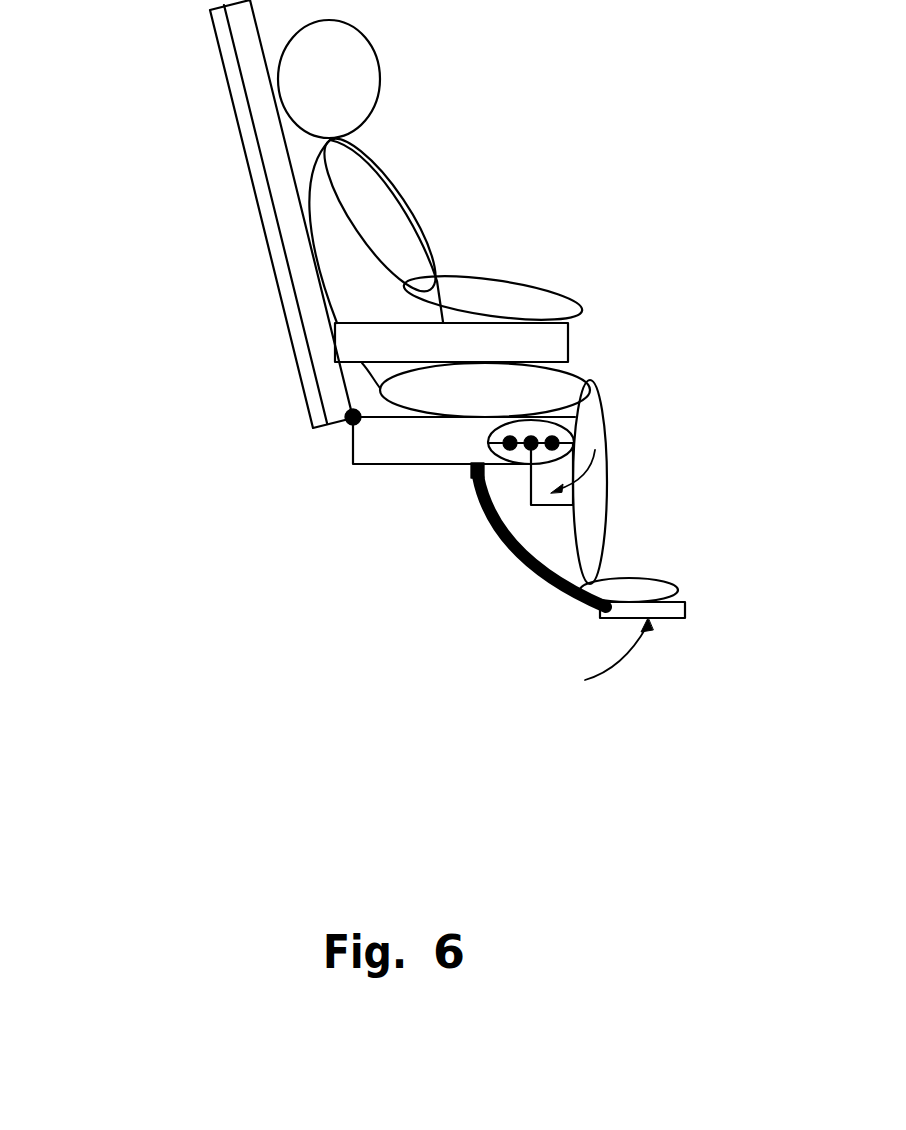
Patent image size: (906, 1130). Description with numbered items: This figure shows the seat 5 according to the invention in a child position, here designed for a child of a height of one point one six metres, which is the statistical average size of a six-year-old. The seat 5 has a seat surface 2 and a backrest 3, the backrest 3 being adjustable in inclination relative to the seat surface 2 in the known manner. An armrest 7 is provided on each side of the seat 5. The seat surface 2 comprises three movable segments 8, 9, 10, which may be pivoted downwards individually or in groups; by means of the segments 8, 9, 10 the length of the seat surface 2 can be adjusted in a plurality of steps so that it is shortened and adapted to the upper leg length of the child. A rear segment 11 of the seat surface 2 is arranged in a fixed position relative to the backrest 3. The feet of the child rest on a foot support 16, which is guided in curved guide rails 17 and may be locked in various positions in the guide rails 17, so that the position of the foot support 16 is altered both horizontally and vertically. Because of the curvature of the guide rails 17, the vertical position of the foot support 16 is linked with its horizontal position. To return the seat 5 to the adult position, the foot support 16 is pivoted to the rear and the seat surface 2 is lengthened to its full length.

The seat surface 2 is at (410, 442).
The backrest 3 is at (260, 182).
The seat 5 is at (253, 72).
The armrest 7 is at (525, 333).
The movable segment 8 is at (560, 473).
The movable segment 9 is at (532, 422).
The movable segment 10 is at (470, 480).
The rear segment 11 is at (372, 443).
The foot support 16 is at (662, 615).
The guide rails 17 is at (558, 587).